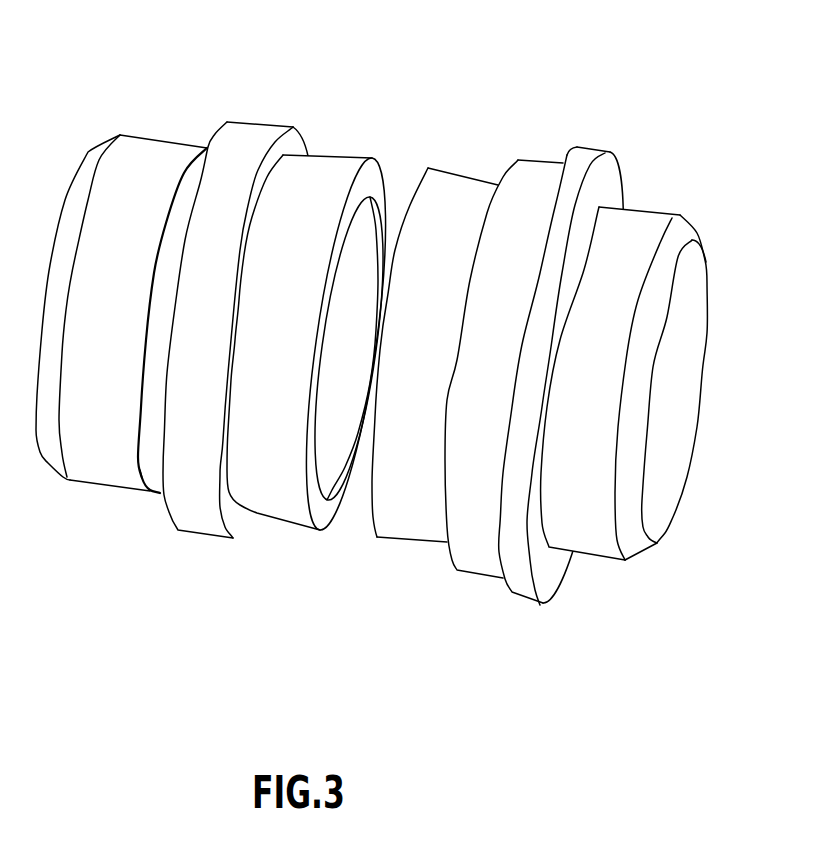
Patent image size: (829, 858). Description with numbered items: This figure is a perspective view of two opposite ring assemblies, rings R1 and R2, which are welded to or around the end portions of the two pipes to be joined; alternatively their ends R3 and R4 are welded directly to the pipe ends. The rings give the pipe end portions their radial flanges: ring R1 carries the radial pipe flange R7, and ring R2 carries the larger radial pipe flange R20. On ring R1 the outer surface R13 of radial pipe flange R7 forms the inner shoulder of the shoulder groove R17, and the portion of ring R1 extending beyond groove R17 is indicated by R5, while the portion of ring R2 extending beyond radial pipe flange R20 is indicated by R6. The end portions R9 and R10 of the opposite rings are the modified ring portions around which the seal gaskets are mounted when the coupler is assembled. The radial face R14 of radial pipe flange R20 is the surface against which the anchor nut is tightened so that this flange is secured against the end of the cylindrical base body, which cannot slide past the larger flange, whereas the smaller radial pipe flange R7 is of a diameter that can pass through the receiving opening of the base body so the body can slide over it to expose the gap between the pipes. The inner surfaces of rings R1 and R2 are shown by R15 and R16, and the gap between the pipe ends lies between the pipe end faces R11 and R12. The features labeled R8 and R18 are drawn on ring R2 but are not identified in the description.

The ring R1 is at (219, 353).
The ring R2 is at (511, 382).
The end of ring R3 is at (84, 156).
The end of ring R4 is at (678, 243).
The extended portion of ring R5 is at (125, 153).
The extended portion of ring R6 is at (612, 233).
The radial pipe flange R7 is at (267, 120).
The large flange of second roller member R8 is at (523, 177).
The end portion of ring R9 is at (318, 177).
The end portion of ring R10 is at (445, 193).
The pipe end face R11 is at (326, 504).
The pipe end face R12 is at (428, 167).
The radial face of radial pipe flange R13 is at (163, 513).
The radial face of radial pipe flange R14 is at (542, 567).
The inner surface R15 is at (378, 247).
The inner surface R16 is at (697, 295).
The shoulder groove R17 is at (193, 173).
The bottom edge of left section R18 is at (403, 542).
The radial pipe flange R20 is at (580, 158).